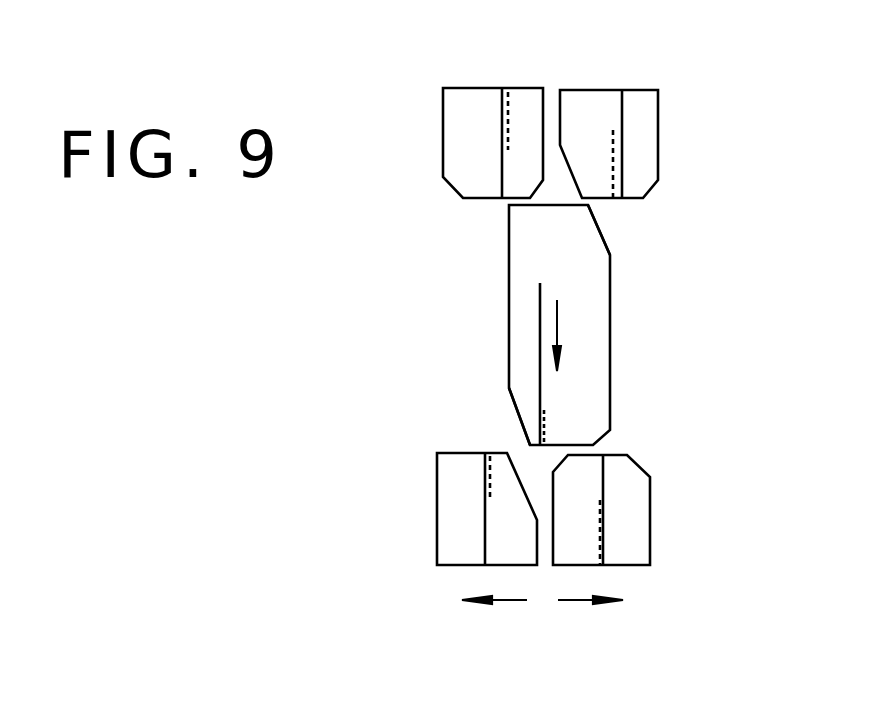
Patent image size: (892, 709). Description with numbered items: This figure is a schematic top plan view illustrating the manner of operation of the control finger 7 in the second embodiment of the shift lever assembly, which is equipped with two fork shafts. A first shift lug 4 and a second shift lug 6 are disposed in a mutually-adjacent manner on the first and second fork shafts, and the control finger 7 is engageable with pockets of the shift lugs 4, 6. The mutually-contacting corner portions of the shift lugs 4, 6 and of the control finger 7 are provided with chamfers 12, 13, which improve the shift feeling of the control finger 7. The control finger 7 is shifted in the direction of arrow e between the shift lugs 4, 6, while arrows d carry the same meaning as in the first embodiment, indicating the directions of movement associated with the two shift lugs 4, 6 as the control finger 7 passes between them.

The first shift lug 4 is at (608, 102).
The second shift lug 6 is at (498, 103).
The control finger 7 is at (598, 292).
The chamfer 12 is at (572, 167).
The chamfer 13 is at (603, 232).
The arrow e is at (558, 327).
The arrow d is at (507, 602).